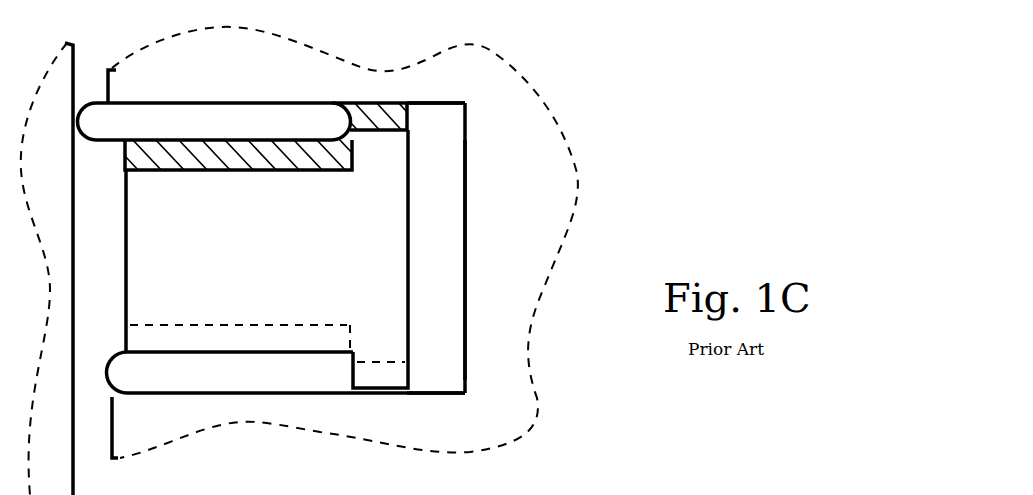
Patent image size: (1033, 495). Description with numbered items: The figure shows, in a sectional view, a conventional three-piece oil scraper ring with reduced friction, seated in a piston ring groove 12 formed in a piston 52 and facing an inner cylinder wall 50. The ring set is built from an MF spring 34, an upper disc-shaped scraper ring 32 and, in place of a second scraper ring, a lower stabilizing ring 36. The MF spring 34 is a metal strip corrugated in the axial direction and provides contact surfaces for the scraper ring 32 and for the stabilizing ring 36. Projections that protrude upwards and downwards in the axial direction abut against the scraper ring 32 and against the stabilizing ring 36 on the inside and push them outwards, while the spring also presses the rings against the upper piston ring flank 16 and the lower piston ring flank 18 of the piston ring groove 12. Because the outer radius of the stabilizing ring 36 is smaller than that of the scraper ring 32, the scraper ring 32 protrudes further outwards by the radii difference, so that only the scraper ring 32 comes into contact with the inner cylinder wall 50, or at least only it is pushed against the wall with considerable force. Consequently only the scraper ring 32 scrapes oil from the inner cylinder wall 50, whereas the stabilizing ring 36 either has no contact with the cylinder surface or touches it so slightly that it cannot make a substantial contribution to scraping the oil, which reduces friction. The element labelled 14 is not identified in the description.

The piston ring groove 12 is at (440, 247).
The plate side surface 14 is at (466, 228).
The upper piston ring flank 16 is at (433, 100).
The lower piston ring flank 18 is at (426, 393).
The scraper ring 32 is at (253, 136).
The MF spring 34 is at (267, 259).
The stabilizing ring 36 is at (286, 374).
The inner cylinder wall 50 is at (73, 201).
The piston 52 is at (343, 242).